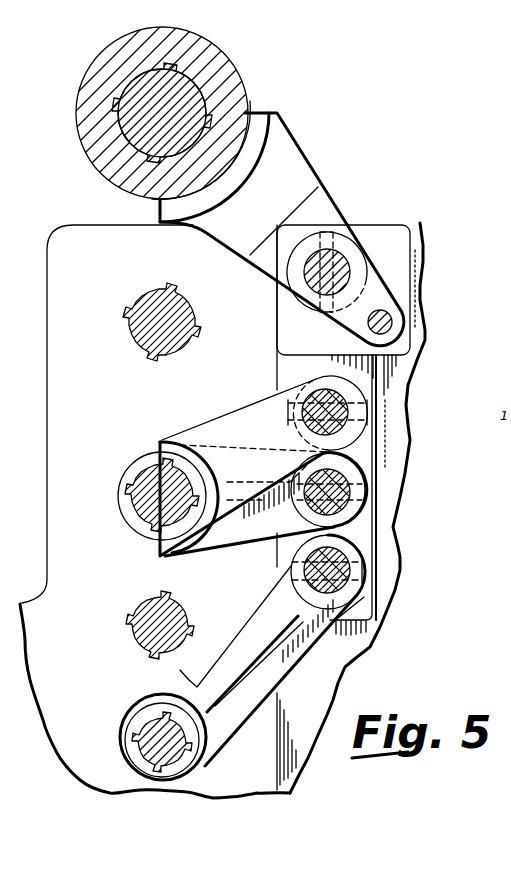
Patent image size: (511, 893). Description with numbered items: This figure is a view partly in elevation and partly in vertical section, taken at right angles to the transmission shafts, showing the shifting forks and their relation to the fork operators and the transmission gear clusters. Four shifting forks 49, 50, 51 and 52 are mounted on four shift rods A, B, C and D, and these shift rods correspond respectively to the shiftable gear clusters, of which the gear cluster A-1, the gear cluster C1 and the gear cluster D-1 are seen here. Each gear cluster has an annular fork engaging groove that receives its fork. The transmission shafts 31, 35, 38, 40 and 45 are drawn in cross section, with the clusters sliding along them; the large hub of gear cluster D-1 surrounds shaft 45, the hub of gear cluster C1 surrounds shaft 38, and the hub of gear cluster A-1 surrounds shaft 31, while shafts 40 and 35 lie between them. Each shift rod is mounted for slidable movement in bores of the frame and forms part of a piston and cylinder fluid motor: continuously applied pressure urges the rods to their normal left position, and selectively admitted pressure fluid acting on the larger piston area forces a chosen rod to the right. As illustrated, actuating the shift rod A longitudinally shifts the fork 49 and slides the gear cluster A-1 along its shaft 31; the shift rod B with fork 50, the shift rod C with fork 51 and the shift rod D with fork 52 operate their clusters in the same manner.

The transmission shaft 45 is at (130, 115).
The gear cluster D-1 is at (92, 150).
The shifting fork 52 is at (300, 170).
The shift rod D is at (350, 257).
The transmission shaft 40 is at (133, 341).
The shifting fork 51 is at (242, 422).
The shift rod C is at (350, 413).
The transmission shaft 38 is at (150, 478).
The gear cluster C1 is at (120, 498).
The shift rod B is at (350, 488).
The shifting fork 50 is at (243, 530).
The shift rod A is at (350, 560).
The transmission shaft 35 is at (138, 630).
The shifting fork 49 is at (278, 663).
The transmission shaft 31 is at (145, 733).
The gear cluster A-1 is at (145, 767).